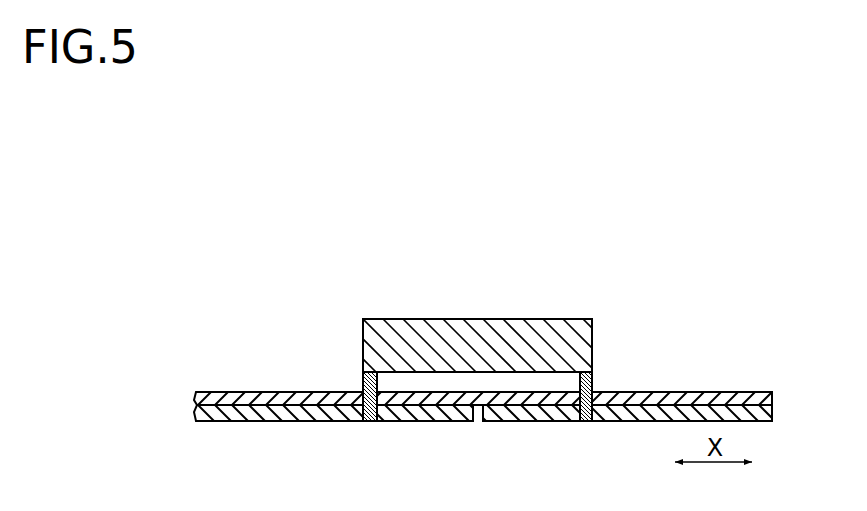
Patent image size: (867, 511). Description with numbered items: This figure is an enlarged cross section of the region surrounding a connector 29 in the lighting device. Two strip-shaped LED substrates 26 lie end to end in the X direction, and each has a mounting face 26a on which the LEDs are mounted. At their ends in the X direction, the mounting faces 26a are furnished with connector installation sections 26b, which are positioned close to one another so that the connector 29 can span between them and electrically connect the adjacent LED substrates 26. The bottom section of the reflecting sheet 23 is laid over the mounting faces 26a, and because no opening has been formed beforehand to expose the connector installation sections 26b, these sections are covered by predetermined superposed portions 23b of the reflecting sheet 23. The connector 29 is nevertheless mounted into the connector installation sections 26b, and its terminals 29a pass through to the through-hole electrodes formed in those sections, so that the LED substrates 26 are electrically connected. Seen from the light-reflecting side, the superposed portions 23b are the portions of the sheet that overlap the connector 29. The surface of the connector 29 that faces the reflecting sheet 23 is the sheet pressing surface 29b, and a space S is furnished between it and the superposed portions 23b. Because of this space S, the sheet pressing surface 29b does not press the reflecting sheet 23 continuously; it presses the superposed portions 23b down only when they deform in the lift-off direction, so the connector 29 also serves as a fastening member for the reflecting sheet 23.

The connector 29 is at (468, 331).
The terminal 29a is at (363, 374).
The sheet pressing surface 29b is at (499, 374).
The space S is at (413, 374).
The reflecting sheet 23 is at (768, 398).
The superposed portion 23b is at (488, 393).
The LED substrate 26 is at (199, 414).
The mounting face 26a is at (222, 392).
The connector installation section 26b is at (367, 422).